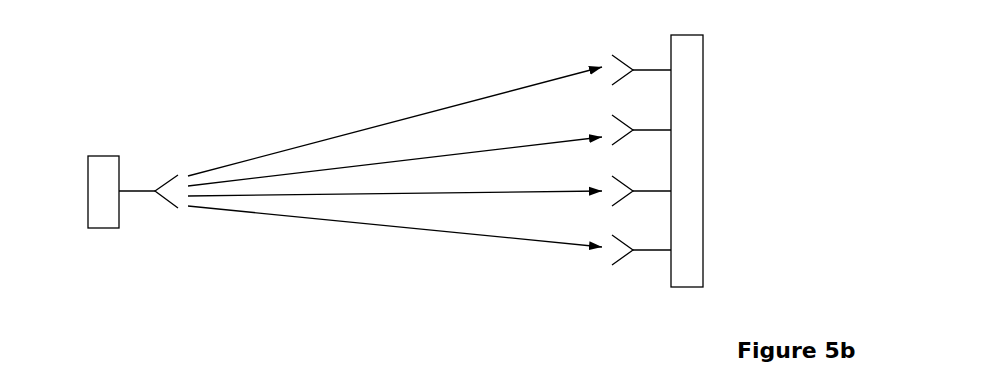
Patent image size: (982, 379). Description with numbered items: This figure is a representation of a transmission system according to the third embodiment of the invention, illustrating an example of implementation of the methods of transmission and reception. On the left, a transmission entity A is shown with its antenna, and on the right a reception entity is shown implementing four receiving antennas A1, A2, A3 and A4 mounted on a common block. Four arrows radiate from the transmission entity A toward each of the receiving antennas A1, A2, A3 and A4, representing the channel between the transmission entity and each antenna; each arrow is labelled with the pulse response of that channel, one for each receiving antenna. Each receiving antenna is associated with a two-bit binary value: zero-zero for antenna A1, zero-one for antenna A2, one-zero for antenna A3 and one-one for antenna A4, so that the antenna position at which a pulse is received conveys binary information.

The transmission entity A is at (133, 168).
The receiving antenna A1 is at (641, 66).
The receiving antenna A2 is at (641, 126).
The receiving antenna A3 is at (641, 186).
The receiving antenna A4 is at (641, 245).